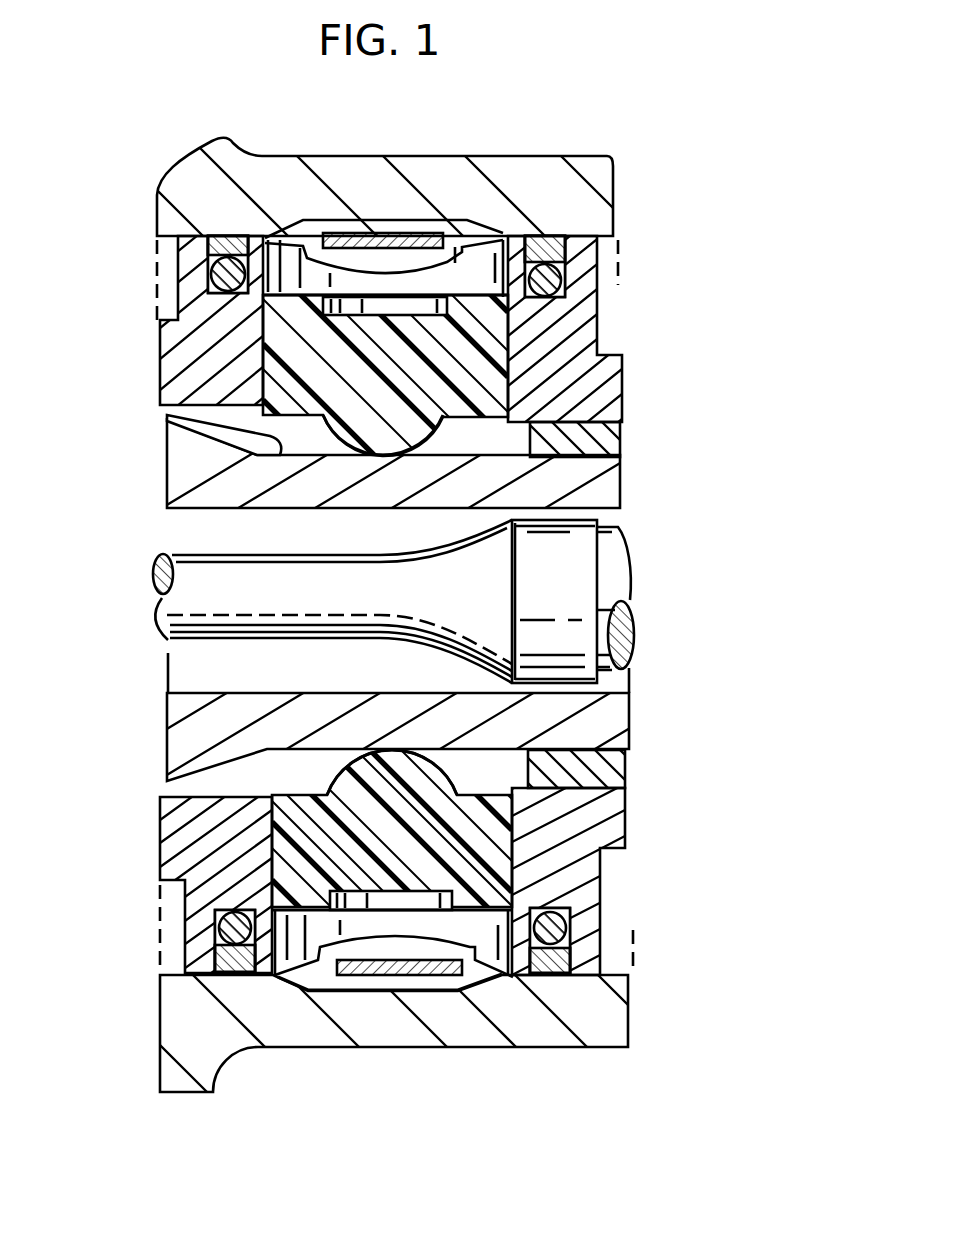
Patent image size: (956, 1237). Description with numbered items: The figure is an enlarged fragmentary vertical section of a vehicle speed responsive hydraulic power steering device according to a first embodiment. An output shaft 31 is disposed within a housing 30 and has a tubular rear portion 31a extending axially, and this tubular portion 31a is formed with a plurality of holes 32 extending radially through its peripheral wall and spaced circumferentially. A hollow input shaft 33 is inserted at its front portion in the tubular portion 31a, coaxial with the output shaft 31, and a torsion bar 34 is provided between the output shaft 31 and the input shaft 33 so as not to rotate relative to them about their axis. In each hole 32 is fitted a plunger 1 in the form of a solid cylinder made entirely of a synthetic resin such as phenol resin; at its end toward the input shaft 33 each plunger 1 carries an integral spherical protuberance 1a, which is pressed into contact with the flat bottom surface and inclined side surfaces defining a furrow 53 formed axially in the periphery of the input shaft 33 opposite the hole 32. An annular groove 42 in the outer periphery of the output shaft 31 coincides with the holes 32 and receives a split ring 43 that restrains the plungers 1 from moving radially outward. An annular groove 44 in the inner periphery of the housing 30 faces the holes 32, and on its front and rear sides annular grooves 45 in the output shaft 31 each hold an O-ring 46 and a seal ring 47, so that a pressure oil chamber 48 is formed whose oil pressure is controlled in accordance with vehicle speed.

The plunger 1 is at (492, 389).
The spherical protuberance 1a is at (372, 440).
The housing 30 is at (278, 1028).
The output shaft 31 is at (186, 367).
The tubular rear portion 31a is at (180, 839).
The hole 32 is at (500, 340).
The input shaft 33 is at (184, 466).
The torsion bar 34 is at (182, 597).
The annular groove 42 is at (313, 242).
The split ring 43 is at (368, 977).
The annular groove 44 is at (456, 991).
The annular groove 45 is at (552, 237).
The O-ring 46 is at (206, 275).
The seal ring 47 is at (207, 242).
The pressure oil chamber 48 is at (475, 268).
The furrow 53 is at (163, 413).